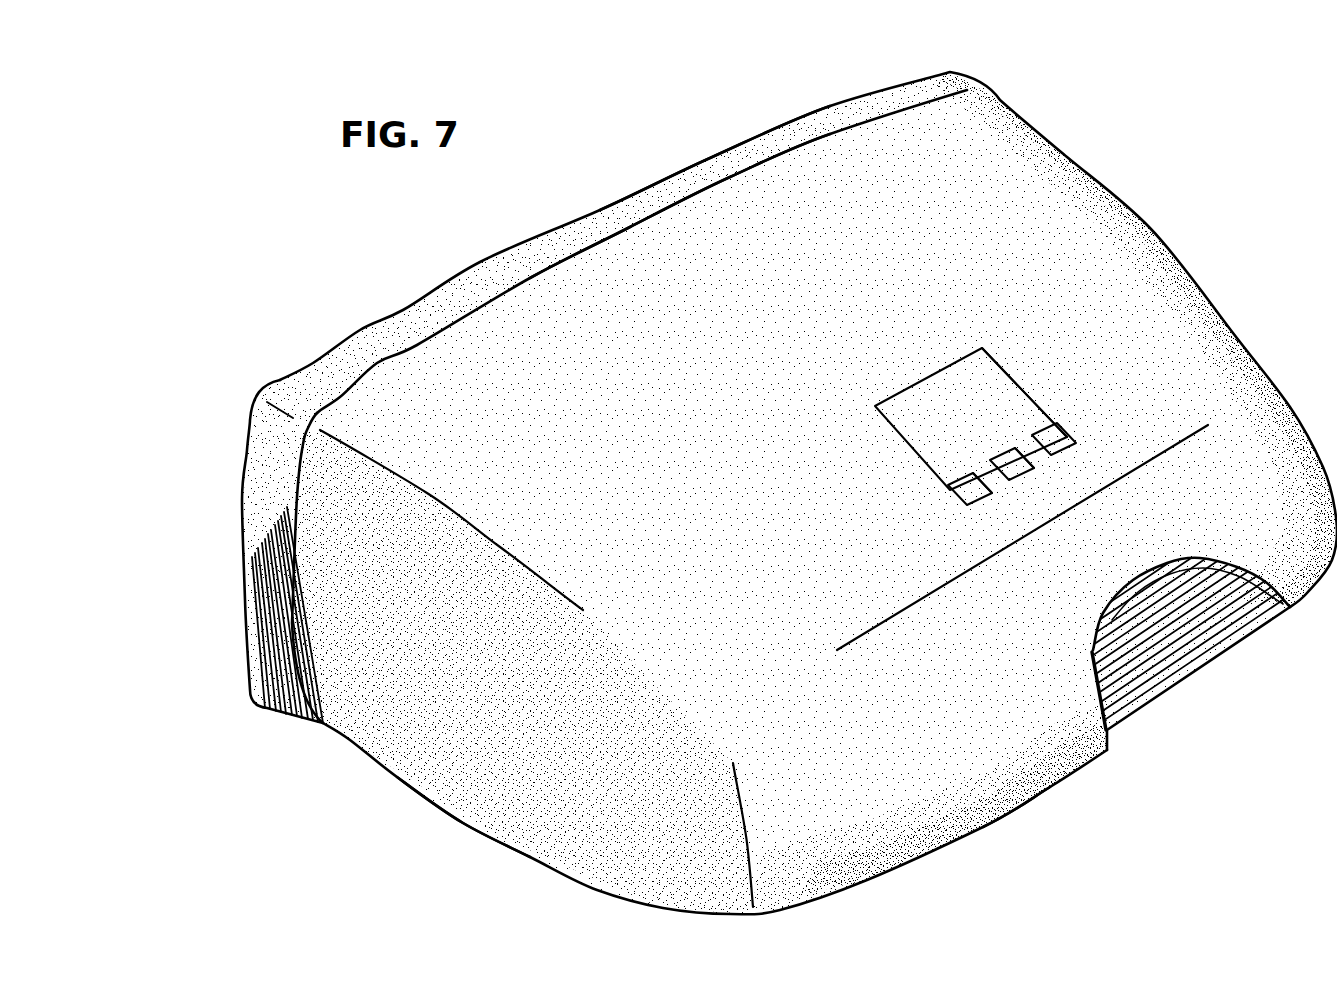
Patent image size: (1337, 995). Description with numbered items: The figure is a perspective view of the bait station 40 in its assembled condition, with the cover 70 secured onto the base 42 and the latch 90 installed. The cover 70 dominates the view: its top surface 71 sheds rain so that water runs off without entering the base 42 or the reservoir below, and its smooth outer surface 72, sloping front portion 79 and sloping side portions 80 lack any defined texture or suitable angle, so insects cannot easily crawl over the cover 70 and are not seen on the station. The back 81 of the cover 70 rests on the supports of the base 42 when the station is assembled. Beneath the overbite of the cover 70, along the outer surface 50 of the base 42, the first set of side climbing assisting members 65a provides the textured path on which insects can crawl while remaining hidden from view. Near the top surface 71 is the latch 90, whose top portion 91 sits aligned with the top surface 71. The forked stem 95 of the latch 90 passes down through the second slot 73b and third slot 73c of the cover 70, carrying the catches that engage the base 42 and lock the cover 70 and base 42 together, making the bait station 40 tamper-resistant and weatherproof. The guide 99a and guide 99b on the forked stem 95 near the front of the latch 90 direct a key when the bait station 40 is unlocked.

The bait station 40 is at (746, 80).
The base 42 is at (218, 448).
The outer surface 50 is at (1190, 630).
The first set of side climbing assisting members 65a is at (278, 648).
The cover 70 is at (1182, 238).
The top surface 71 is at (1012, 178).
The smooth outer surface 72 is at (718, 459).
The second slot 73b is at (1068, 440).
The third slot 73c is at (956, 494).
The sloping front portion 79 is at (1023, 733).
The sloping side portions 80 is at (487, 758).
The back 81 is at (632, 226).
The latch 90 is at (998, 401).
The top portion 91 is at (1040, 415).
The forked stem 95 is at (1020, 472).
The guide 99a is at (990, 490).
The guide 99b is at (1045, 461).